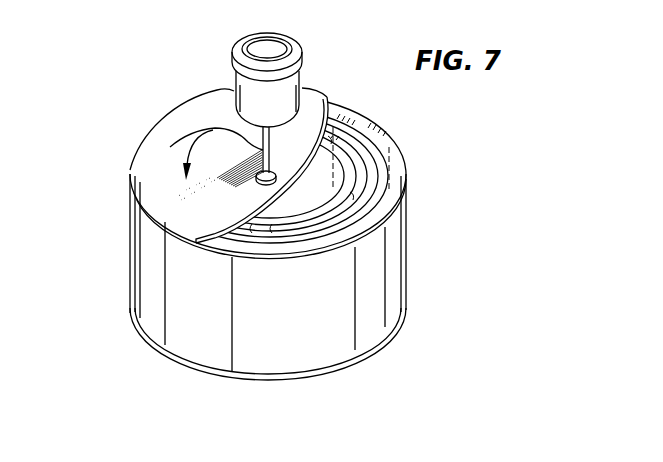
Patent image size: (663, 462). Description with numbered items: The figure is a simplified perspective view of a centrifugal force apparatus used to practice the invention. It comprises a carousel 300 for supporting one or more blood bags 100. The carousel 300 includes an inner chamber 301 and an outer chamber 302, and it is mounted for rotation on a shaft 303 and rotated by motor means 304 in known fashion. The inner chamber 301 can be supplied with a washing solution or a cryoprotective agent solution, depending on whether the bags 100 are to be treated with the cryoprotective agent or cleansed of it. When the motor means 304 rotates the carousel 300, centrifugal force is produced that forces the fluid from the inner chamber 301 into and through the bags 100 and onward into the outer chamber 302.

The blood bag 100 is at (358, 172).
The carousel 300 is at (118, 220).
The inner chamber 301 is at (343, 105).
The outer chamber 302 is at (383, 196).
The shaft 303 is at (132, 165).
The motor means 304 is at (250, 92).